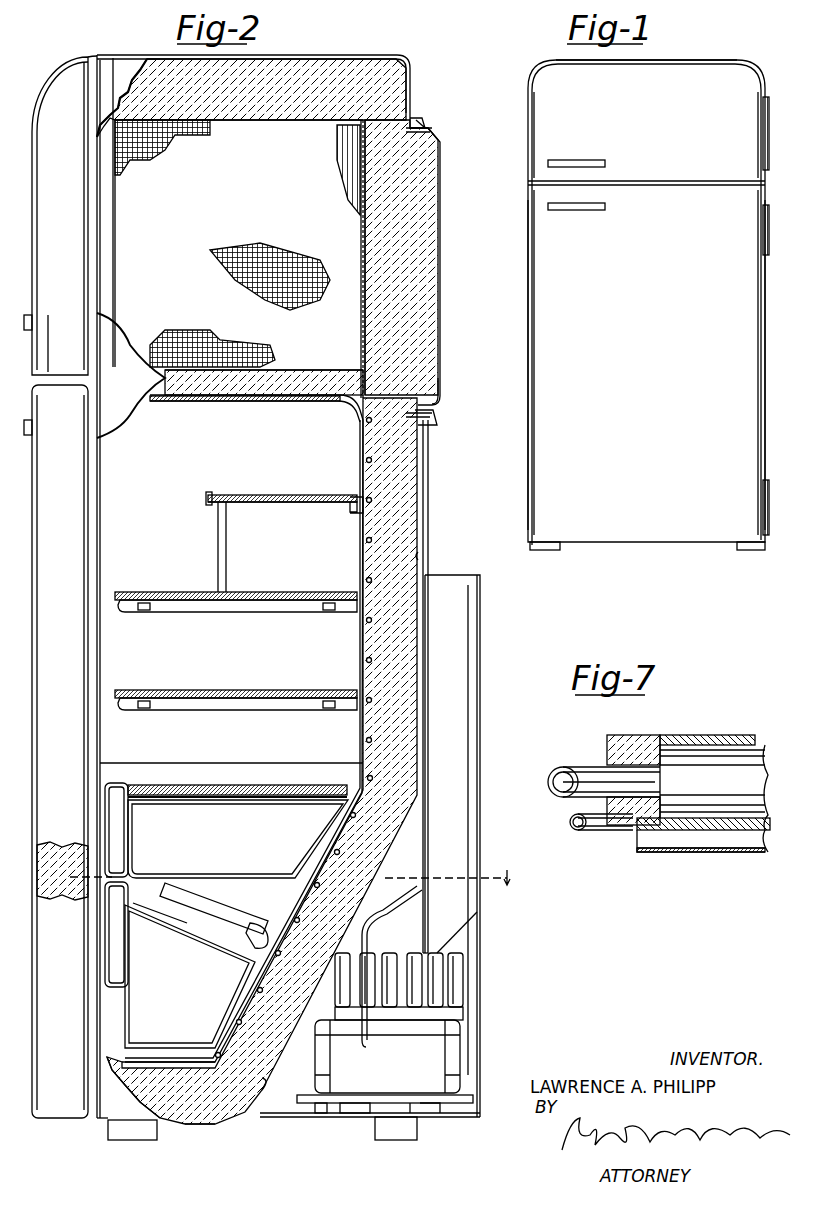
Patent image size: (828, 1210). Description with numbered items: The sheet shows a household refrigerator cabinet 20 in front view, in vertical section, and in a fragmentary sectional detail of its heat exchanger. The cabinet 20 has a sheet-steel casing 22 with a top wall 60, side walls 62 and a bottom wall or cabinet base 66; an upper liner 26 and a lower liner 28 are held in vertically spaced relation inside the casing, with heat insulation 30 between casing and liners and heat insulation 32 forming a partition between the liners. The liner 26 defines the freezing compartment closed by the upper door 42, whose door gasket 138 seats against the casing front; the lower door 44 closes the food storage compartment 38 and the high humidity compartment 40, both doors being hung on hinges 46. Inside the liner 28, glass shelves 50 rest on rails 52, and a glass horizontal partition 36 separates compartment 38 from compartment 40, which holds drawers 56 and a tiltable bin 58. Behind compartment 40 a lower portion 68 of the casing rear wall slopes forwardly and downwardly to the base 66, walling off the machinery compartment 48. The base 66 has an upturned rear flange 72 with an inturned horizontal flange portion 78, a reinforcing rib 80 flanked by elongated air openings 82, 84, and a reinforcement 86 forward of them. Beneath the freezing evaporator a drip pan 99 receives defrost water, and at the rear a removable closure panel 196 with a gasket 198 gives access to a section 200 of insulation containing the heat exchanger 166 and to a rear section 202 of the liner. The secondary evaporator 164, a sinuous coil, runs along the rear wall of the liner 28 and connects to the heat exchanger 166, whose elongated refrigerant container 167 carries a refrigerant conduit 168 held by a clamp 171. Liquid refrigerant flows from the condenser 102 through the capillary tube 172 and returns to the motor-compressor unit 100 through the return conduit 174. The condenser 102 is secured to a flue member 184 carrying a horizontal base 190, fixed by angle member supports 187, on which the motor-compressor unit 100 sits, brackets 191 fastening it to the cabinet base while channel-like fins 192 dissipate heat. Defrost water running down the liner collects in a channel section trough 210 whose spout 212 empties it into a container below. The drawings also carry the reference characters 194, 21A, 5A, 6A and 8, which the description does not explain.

In FIG. 2, the cabinet 20 is at (410, 58).
In FIG. 1, the cabinet 20 is at (738, 64).
In FIG. 2, the casing 22 is at (352, 57).
In FIG. 2, the liner 26 is at (356, 218).
In FIG. 2, the second liner 28 is at (165, 402).
In FIG. 2, the heat insulation 30 is at (243, 112).
In FIG. 2, the heat insulation 32 is at (222, 395).
In FIG. 2, the horizontal partition 36 is at (203, 786).
In FIG. 2, the food storage compartment 38 is at (150, 486).
In FIG. 2, the high humidity compartment 40 is at (260, 892).
In FIG. 2, the upper door 42 is at (38, 88).
In FIG. 1, the upper door 42 is at (537, 151).
In FIG. 2, the lower door 44 is at (37, 590).
In FIG. 1, the lower door 44 is at (537, 269).
In FIG. 1, the hinges 46 is at (770, 100).
In FIG. 2, the machinery compartment 48 is at (262, 1108).
In FIG. 2, the shelves 50 is at (294, 497).
In FIG. 2, the rails 52 is at (265, 504).
In FIG. 2, the drawers 56 is at (250, 812).
In FIG. 2, the tiltable bin 58 is at (130, 938).
In FIG. 2, the top wall 60 is at (174, 56).
In FIG. 1, the top wall 60 is at (565, 60).
In FIG. 2, the side walls 62 is at (117, 410).
In FIG. 1, the side walls 62 is at (528, 336).
In FIG. 2, the bottom wall 66 is at (170, 1122).
In FIG. 2, the lower portion of casing rear wall 68 is at (320, 985).
In FIG. 2, the rear flange 72 is at (408, 1140).
In FIG. 2, the horizontal flange portion 78 is at (410, 1095).
In FIG. 2, the reinforcing rib 80 is at (323, 1115).
In FIG. 2, the elongated opening 82 is at (275, 1117).
In FIG. 2, the elongated opening 84 is at (364, 1118).
In FIG. 2, the reinforcement 86 is at (215, 1124).
In FIG. 2, the pan 99 is at (295, 392).
In FIG. 2, the refrigerant motor-compressor unit 100 is at (460, 1032).
In FIG. 2, the refrigerant condenser 102 is at (468, 670).
In FIG. 2, the door gasket 138 is at (88, 56).
In FIG. 2, the refrigerant evaporator 164 is at (366, 625).
In FIG. 7, the refrigerant evaporator 164 is at (563, 767).
In FIG. 7, the heat exchanger 166 is at (752, 725).
In FIG. 7, the refrigerant container 167 is at (738, 790).
In FIG. 7, the refrigerant conduit 168 is at (597, 832).
In FIG. 7, the clamp 171 is at (716, 852).
In FIG. 2, the capillary tube 172 is at (430, 905).
In FIG. 2, the return conduit 174 is at (388, 912).
In FIG. 2, the flue member 184 is at (481, 622).
In FIG. 2, the angle member supports 187 is at (478, 932).
In FIG. 2, the horizontal base 190 is at (455, 1103).
In FIG. 2, the brackets 191 is at (430, 1105).
In FIG. 2, the channel-like fins 192 is at (464, 977).
In FIG. 2, the clamp strip 194 is at (428, 128).
In FIG. 2, the closure panel 196 is at (440, 383).
In FIG. 2, the gasket 198 is at (425, 120).
In FIG. 2, the section of cabinet insulation 200 is at (425, 236).
In FIG. 2, the rear section of screen liner 202 is at (363, 330).
In FIG. 2, the channel section trough 210 is at (198, 902).
In FIG. 2, the spout 212 is at (240, 937).
In FIG. 2, the storage bin 21A is at (215, 1012).
In FIG. 2, the shelf hanger rod 5A is at (228, 548).
In FIG. 2, the shell seam 6A is at (420, 556).
In FIG. 2, the section line 8 is at (78, 890).